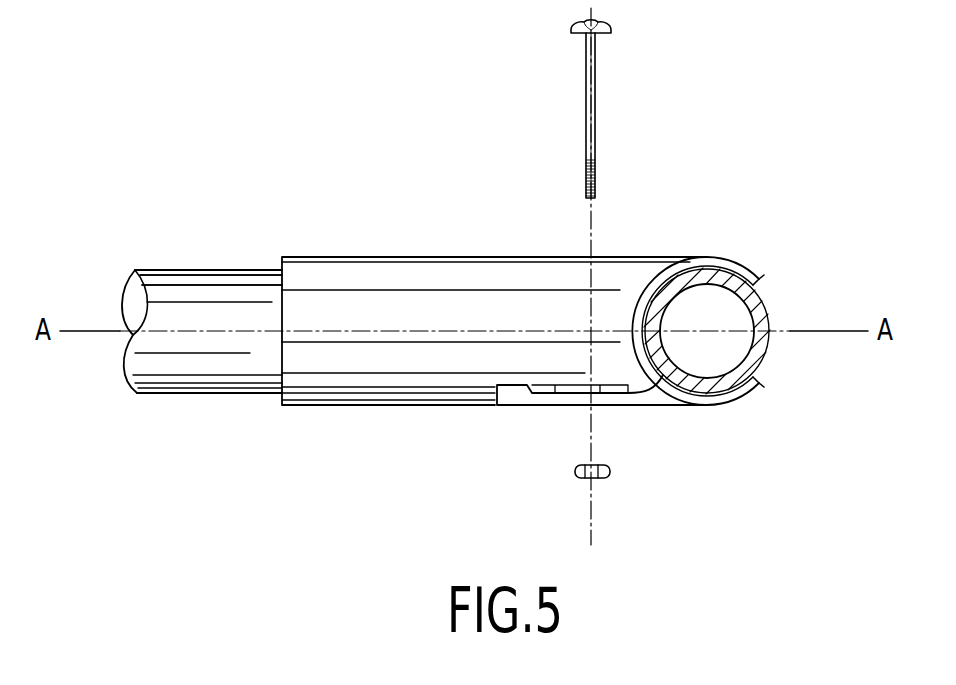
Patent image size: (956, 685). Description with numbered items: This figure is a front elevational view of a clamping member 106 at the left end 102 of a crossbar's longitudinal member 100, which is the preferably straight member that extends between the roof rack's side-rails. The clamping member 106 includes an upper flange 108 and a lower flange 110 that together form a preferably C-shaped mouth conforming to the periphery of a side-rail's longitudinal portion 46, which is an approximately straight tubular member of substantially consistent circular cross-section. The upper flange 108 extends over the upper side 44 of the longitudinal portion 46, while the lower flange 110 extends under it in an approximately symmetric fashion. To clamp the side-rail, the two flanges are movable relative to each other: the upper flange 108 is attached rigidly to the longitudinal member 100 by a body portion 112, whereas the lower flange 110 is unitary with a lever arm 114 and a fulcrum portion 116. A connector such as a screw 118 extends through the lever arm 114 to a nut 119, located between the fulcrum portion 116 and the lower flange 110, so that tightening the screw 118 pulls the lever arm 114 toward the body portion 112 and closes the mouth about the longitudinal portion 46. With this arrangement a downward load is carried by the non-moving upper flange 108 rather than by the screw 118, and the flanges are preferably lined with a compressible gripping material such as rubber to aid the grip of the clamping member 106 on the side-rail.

The upper side 44 is at (687, 280).
The longitudinal portion 46 is at (770, 320).
The longitudinal member 100 is at (196, 372).
The left end 102 is at (213, 292).
The clamping member 106 is at (428, 335).
The upper flange 108 is at (728, 265).
The lower flange 110 is at (720, 402).
The body portion 112 is at (433, 283).
The lever arm 114 is at (633, 398).
The fulcrum portion 116 is at (506, 395).
The screw 118 is at (596, 62).
The nut 119 is at (575, 470).